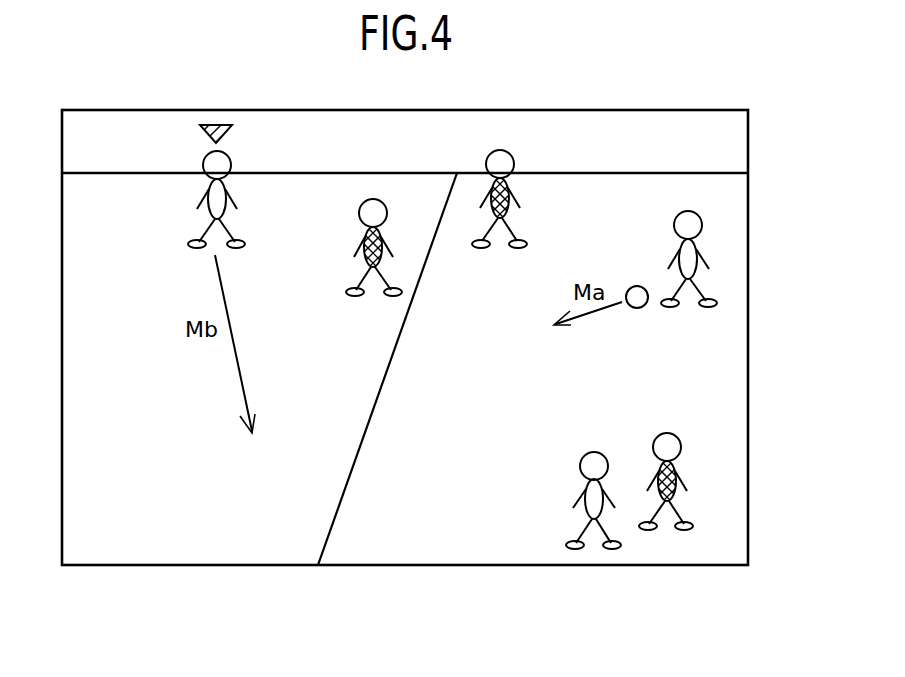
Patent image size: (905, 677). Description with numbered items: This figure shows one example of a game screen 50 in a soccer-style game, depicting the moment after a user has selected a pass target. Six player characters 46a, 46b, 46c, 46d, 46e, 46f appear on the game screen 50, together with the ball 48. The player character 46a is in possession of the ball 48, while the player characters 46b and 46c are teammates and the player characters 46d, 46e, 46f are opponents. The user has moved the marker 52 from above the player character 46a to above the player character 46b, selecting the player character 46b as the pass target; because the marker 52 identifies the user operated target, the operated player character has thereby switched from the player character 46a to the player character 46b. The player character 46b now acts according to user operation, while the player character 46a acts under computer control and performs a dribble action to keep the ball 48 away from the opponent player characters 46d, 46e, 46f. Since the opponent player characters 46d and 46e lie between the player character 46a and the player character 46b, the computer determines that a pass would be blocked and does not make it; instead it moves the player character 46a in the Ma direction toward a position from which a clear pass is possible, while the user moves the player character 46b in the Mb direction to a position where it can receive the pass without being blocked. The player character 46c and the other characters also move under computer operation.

The game screen 50 is at (252, 566).
The marker 52 is at (216, 124).
The player character 46a is at (702, 222).
The player character 46b is at (207, 205).
The player character 46c is at (580, 466).
The player character 46d is at (360, 215).
The player character 46e is at (513, 151).
The player character 46f is at (672, 433).
The ball 48 is at (636, 308).